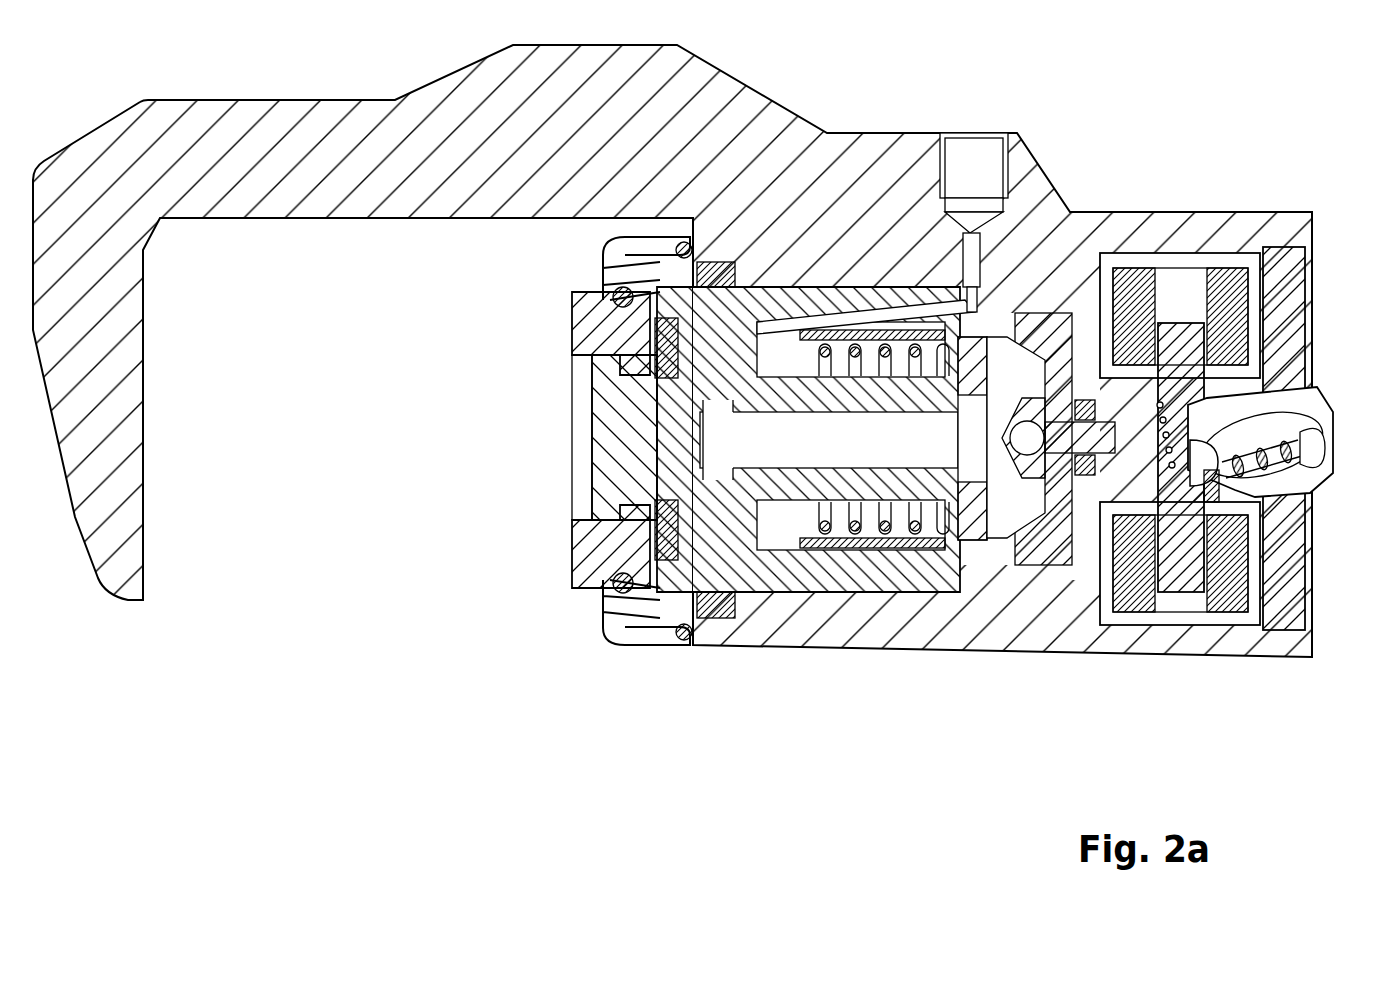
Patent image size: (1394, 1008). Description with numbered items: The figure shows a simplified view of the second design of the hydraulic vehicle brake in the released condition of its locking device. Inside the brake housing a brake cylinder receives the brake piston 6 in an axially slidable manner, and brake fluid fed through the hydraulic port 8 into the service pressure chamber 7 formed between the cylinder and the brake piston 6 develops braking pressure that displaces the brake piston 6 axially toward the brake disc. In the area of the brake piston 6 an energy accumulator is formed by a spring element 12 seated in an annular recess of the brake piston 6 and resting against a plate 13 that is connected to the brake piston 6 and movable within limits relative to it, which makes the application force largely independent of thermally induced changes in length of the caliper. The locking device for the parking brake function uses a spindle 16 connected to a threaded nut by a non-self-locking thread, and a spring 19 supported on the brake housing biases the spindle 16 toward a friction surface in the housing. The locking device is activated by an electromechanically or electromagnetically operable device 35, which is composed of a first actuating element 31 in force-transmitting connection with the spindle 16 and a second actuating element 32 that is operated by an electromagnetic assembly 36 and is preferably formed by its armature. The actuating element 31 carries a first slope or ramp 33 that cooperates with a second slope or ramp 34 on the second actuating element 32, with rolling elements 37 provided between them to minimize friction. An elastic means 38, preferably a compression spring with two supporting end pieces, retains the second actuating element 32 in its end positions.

The brake piston 6 is at (742, 565).
The service pressure chamber 7 is at (795, 538).
The hydraulic port 8 is at (1000, 175).
The spring element 12 is at (653, 333).
The plate 13 is at (592, 565).
The spindle 16 is at (806, 470).
The spring 19 is at (896, 522).
The actuating element 31 is at (1085, 445).
The second actuating element 32 is at (1184, 330).
The first slope or ramp 33 is at (1228, 424).
The second slope or ramp 34 is at (1185, 485).
The electromechanically or electromagnetically operable device 35 is at (1255, 400).
The electromagnetic assembly 36 is at (1134, 265).
The rolling elements 37 is at (1172, 468).
The elastic means 38 is at (1262, 487).